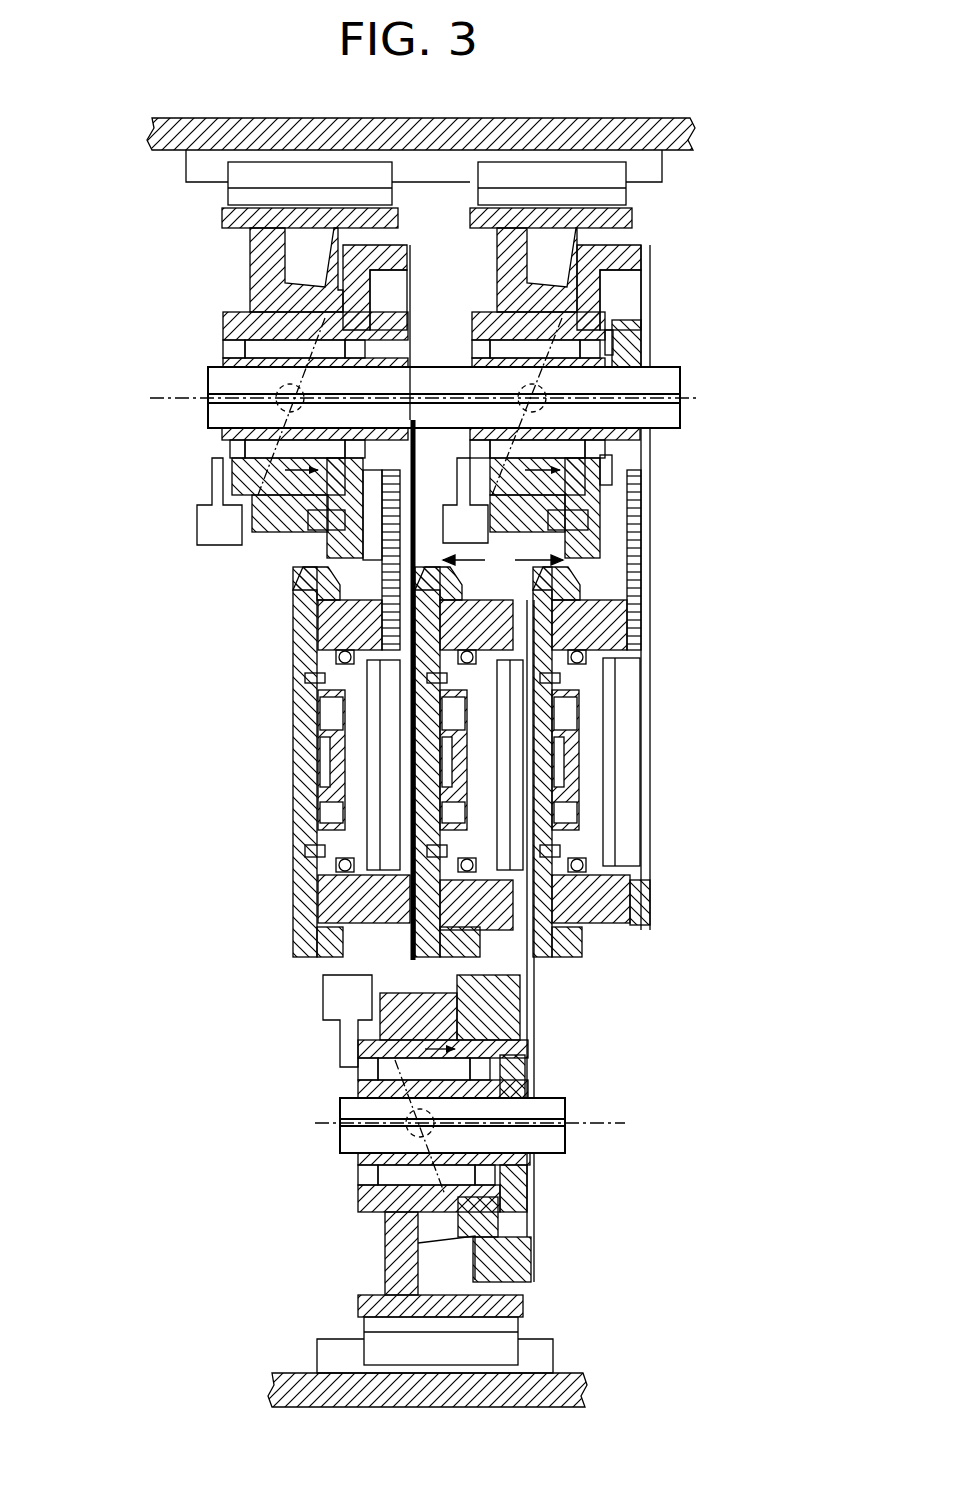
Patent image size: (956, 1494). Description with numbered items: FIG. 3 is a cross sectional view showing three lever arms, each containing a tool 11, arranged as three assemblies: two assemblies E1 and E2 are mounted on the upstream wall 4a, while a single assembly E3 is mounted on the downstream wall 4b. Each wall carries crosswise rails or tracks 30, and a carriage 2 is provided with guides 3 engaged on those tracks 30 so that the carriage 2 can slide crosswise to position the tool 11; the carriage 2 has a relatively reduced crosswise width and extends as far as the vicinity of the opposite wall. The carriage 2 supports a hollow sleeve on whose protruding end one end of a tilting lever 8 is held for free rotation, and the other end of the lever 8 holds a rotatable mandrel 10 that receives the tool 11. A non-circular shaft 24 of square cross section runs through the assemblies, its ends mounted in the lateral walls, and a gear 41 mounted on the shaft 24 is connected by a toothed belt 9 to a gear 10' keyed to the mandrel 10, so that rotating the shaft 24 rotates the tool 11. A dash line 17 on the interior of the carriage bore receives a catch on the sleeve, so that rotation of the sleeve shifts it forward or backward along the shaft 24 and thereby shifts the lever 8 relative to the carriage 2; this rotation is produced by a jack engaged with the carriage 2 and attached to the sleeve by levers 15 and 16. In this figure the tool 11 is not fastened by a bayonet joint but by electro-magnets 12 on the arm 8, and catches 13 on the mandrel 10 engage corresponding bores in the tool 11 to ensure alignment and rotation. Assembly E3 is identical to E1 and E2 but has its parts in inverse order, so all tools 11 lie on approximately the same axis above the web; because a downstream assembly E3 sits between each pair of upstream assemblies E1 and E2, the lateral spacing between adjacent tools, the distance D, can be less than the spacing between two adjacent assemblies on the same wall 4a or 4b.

The upstream wall 4a is at (150, 128).
The downstream wall 4b is at (300, 1392).
The guide 3 is at (250, 177).
The carriage 2 is at (270, 527).
The assembly E1 is at (414, 328).
The assembly E2 is at (652, 325).
The assembly E3 is at (530, 1242).
The gear 41 is at (632, 356).
The shaft 24 is at (212, 382).
The dash line 17 is at (212, 405).
The lever 16 is at (216, 475).
The lever 15 is at (197, 522).
The toothed belt 9 is at (641, 496).
The tilting lever 8 is at (332, 545).
The catch 13 is at (603, 681).
The mandrel 10 is at (509, 762).
The gear 10' is at (550, 764).
The electro-magnet 12 is at (576, 810).
The tool 11 is at (568, 942).
The rail or track 30 is at (545, 1353).
The distance D is at (503, 564).